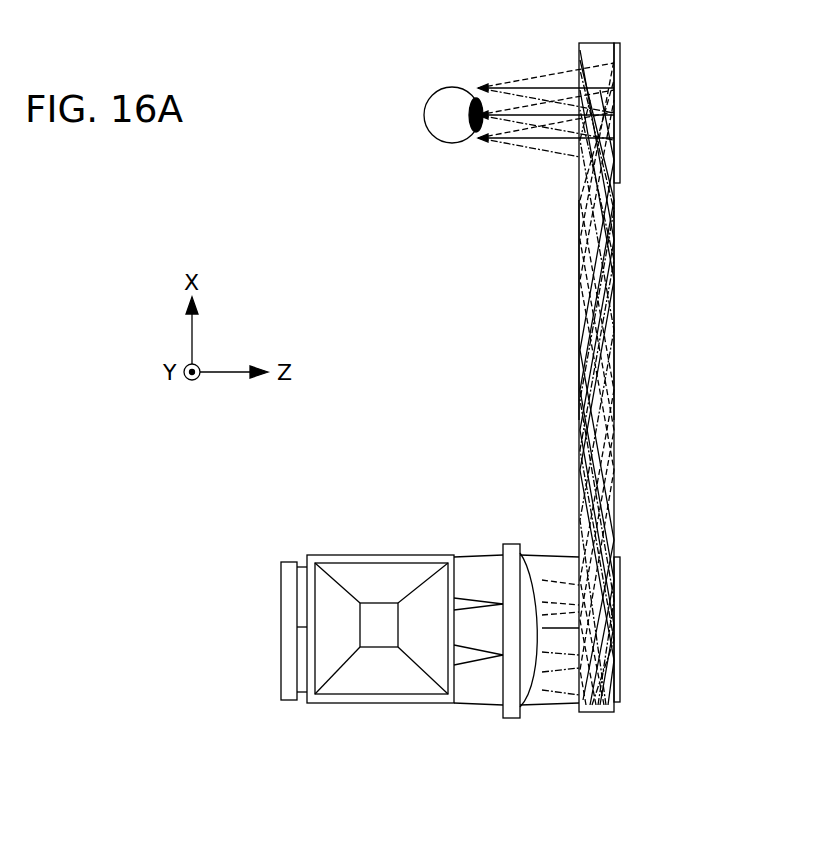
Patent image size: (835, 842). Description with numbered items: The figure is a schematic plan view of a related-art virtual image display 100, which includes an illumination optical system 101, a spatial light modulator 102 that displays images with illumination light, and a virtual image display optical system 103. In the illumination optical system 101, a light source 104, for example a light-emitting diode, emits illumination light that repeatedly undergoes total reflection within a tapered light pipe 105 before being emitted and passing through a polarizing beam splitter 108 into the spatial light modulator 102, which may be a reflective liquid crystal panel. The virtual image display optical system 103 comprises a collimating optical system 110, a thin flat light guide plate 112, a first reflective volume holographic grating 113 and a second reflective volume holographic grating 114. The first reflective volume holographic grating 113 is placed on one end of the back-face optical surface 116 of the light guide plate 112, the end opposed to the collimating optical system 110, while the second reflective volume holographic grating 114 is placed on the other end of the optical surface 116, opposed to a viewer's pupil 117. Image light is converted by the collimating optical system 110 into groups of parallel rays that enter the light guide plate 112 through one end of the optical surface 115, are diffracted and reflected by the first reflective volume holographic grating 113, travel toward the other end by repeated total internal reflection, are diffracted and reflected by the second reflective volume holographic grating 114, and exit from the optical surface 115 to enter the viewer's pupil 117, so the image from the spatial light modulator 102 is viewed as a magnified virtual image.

The virtual image display 100 is at (757, 43).
The illumination optical system 101 is at (422, 732).
The spatial light modulator 102 is at (288, 670).
The virtual image display optical system 103 is at (710, 509).
The light source 104 is at (380, 633).
The tapered light pipe 105 is at (380, 578).
The polarizing beam splitter 108 is at (343, 553).
The collimating optical system 110 is at (511, 712).
The light guide plate 112 is at (614, 440).
The first reflective volume holographic grating 113 is at (620, 621).
The second reflective volume holographic grating 114 is at (620, 128).
The optical surface 115 is at (565, 307).
The optical surface (back face) 116 is at (630, 307).
The viewer's pupil 117 is at (452, 84).